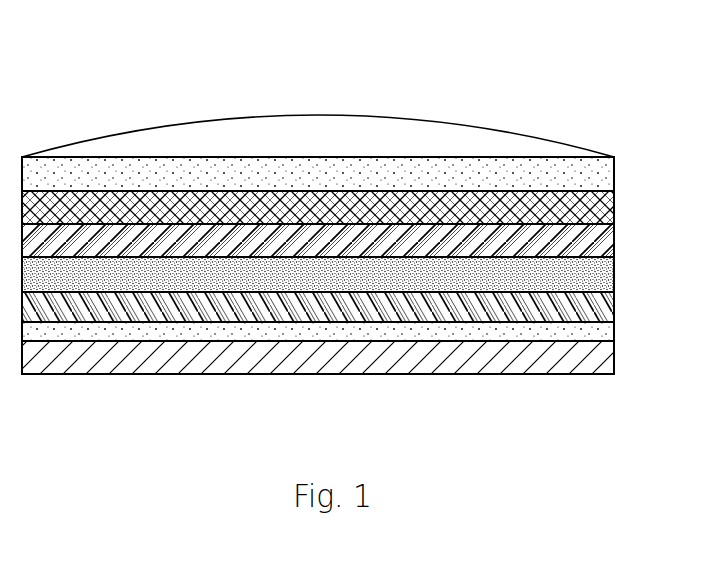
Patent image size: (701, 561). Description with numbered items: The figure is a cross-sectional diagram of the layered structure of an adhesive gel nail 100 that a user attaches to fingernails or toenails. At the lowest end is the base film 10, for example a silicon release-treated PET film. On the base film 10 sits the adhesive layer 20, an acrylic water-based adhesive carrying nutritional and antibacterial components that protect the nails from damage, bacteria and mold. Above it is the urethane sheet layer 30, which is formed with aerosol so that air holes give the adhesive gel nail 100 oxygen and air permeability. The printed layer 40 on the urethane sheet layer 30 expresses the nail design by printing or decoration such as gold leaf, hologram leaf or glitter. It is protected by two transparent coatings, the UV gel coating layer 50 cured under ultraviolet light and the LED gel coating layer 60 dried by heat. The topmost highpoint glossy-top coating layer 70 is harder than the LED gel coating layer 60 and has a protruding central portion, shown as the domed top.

The adhesive gel nail 100 is at (602, 35).
The base film 10 is at (603, 357).
The adhesive layer 20 is at (603, 329).
The urethane sheet layer 30 is at (603, 304).
The printed layer 40 is at (603, 274).
The UV gel coating layer 50 is at (603, 239).
The LED gel coating layer 60 is at (603, 205).
The highpoint glossy-top coating layer 70 is at (603, 169).